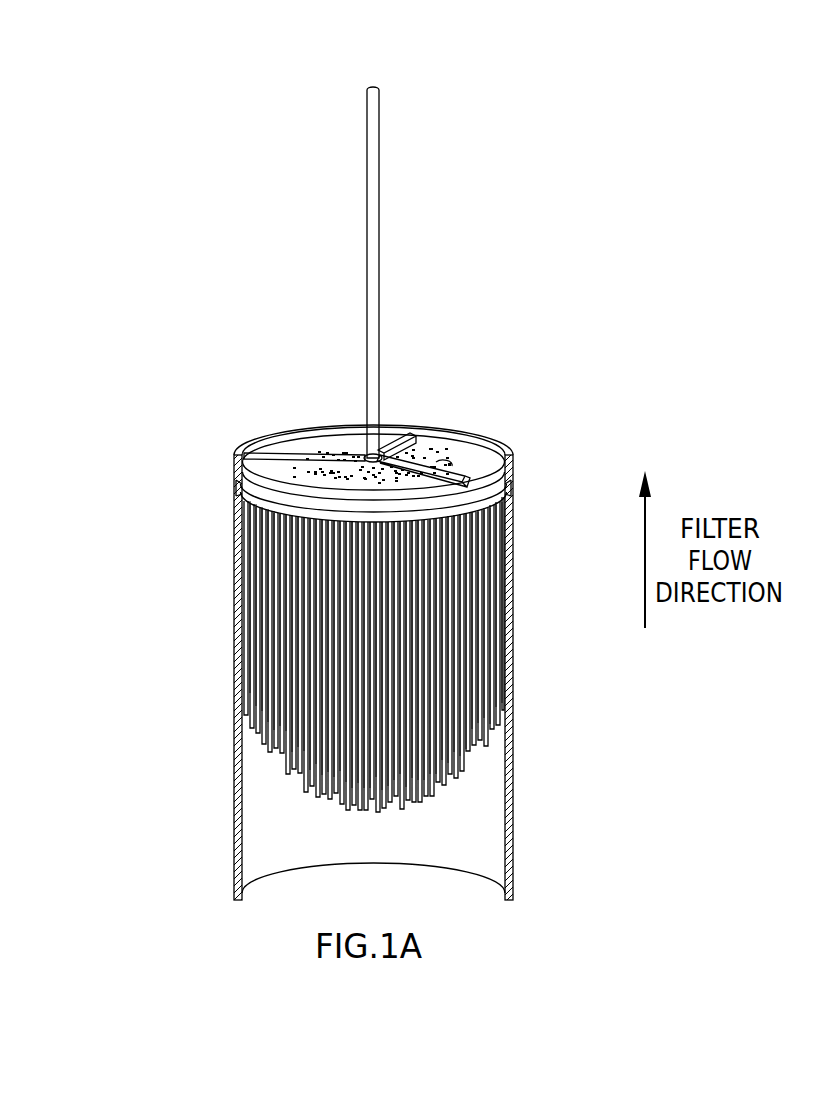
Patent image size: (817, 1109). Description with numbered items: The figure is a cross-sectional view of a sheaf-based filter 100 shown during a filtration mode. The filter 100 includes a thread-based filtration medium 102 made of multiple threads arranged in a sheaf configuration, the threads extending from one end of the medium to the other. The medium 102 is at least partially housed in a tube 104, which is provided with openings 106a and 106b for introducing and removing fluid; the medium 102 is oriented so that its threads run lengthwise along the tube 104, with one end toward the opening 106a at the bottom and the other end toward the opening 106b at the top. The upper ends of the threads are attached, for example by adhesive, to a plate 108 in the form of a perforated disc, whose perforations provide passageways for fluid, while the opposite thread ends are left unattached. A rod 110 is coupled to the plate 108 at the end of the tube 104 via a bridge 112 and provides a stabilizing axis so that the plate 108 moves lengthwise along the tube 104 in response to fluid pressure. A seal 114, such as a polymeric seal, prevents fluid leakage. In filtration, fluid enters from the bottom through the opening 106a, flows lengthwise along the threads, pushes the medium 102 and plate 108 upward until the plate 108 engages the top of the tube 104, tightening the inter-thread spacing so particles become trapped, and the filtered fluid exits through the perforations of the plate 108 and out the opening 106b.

The sheaf-based filter 100 is at (278, 96).
The thread-based filtration medium 102 is at (470, 618).
The tube 104 is at (516, 790).
The opening 106a is at (321, 850).
The opening 106b is at (334, 396).
The plate 108 is at (508, 487).
The rod 110 is at (367, 195).
The bridge 112 is at (453, 456).
The seal 114 is at (238, 494).